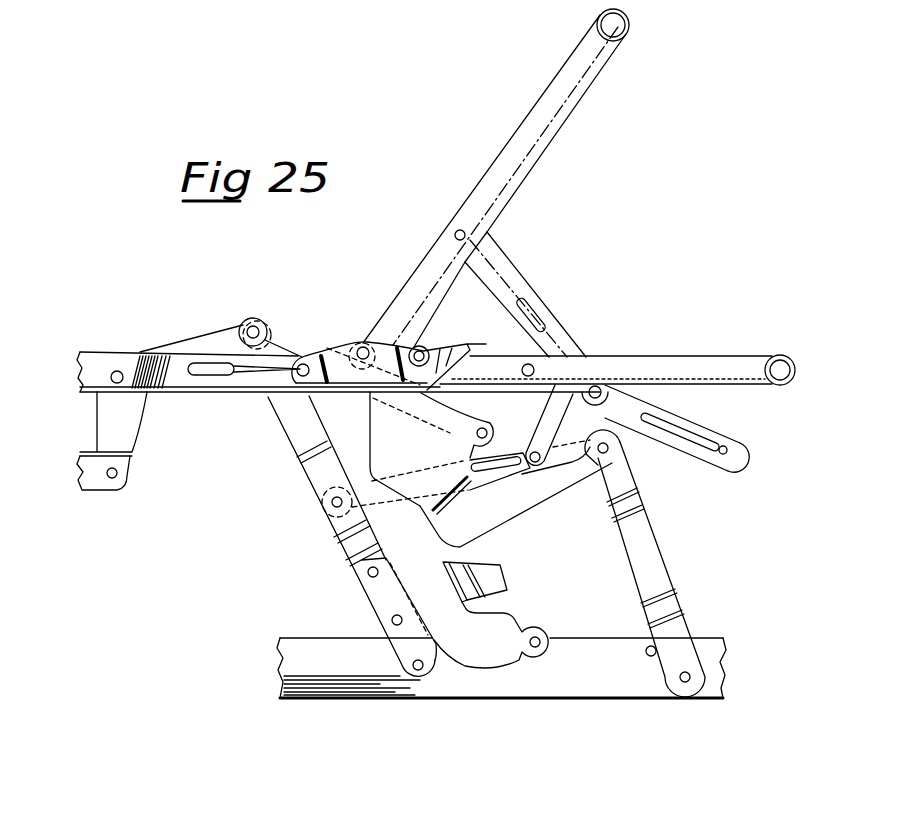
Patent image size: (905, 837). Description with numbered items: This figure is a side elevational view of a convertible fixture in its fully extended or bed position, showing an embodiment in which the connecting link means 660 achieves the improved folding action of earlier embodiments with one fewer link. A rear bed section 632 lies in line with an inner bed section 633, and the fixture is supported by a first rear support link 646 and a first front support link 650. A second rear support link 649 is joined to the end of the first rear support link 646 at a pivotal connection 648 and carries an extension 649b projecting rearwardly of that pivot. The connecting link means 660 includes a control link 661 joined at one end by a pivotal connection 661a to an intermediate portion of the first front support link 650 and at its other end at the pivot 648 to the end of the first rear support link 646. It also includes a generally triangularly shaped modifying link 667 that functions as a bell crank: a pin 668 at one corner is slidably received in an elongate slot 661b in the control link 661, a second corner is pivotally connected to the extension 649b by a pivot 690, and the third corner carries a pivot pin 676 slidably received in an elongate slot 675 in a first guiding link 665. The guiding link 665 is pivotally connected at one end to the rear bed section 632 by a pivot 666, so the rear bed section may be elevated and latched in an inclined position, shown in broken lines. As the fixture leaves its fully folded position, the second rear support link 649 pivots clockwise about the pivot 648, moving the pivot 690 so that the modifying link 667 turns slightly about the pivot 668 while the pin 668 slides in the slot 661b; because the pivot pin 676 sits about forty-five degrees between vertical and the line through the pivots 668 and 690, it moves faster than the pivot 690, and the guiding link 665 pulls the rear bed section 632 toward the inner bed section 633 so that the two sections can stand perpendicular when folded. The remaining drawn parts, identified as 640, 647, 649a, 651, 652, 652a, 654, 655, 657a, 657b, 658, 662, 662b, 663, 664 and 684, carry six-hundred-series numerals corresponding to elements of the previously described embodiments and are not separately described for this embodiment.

The rear bed section 632 is at (559, 130).
The inner bed section 633 is at (88, 352).
The base rail 640 is at (290, 660).
The first rear support link 646 is at (665, 577).
The rear leg pivot pin 647 is at (687, 682).
The pivotal connection 648 is at (600, 458).
The second rear support link 649 is at (527, 503).
The link plate tab 649a is at (420, 444).
The extension 649b is at (639, 452).
The first front support link 650 is at (352, 547).
The front leg pivot pin 651 is at (415, 674).
The bracket 652 is at (387, 598).
The bracket tab 652a is at (508, 580).
The pivot pin 654 is at (268, 320).
The triangular brace 655 is at (247, 320).
The rail flange 657a is at (180, 343).
The hanger bracket 657b is at (107, 423).
The mounting hole 658 is at (110, 377).
The connecting link means 660 is at (505, 433).
The control link 661 is at (397, 503).
The pivotal connection 661a is at (332, 503).
The elongate slot 661b is at (492, 480).
The pivot bracket 662 is at (333, 340).
The bracket hole 662b is at (363, 346).
The arm edge 663 is at (427, 333).
The bracket base 664 is at (327, 388).
The first guiding link 665 is at (497, 252).
The pivot 666 is at (522, 362).
The modifying link 667 is at (565, 393).
The pin 668 is at (535, 452).
The elongate slot 675 is at (722, 472).
The pivot pin 676 is at (597, 385).
The hanger pin 684 is at (113, 478).
The pivot 690 is at (662, 400).